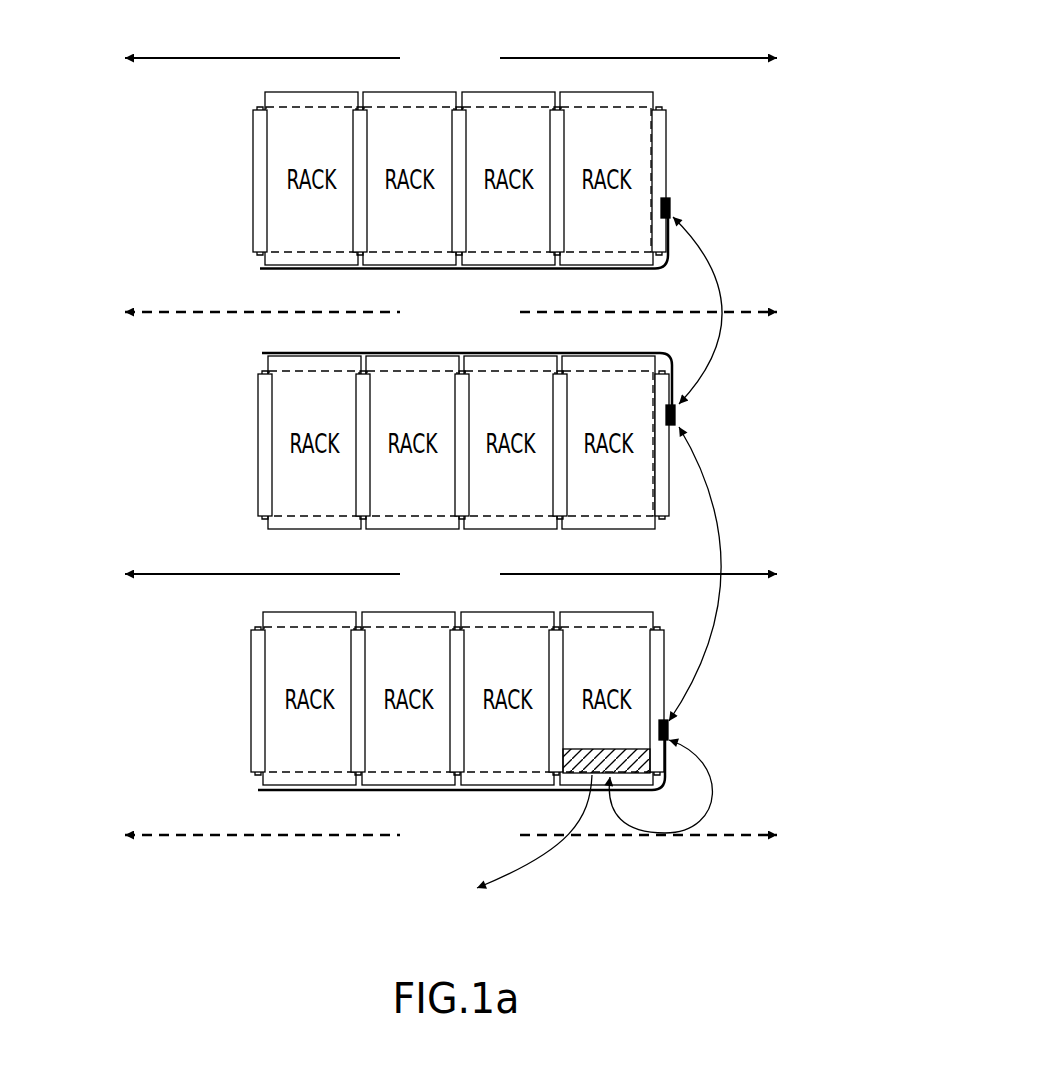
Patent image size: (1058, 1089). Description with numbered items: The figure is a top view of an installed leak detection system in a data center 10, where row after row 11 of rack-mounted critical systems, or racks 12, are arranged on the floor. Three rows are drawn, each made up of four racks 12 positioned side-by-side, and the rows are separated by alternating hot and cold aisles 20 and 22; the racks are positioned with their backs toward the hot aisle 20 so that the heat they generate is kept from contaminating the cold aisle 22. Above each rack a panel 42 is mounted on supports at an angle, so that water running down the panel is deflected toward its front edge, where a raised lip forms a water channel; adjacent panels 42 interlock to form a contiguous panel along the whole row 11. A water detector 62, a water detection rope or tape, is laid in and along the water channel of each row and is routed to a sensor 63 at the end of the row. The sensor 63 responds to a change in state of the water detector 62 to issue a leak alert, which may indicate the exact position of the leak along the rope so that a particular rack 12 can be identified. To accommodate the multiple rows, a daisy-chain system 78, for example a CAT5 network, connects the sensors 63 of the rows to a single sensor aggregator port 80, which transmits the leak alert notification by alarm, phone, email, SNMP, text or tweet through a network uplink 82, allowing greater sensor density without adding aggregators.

The data center 10 is at (138, 117).
The row 11 is at (220, 197).
The rack 12 is at (253, 143).
The hot aisle 20 is at (750, 572).
The cold aisle 22 is at (753, 311).
The panel 42 is at (640, 143).
The water detector 62 is at (668, 243).
The sensor 63 is at (670, 205).
The daisy-chain system 78 is at (718, 517).
The sensor aggregator port 80 is at (652, 760).
The network uplink 82 is at (563, 860).